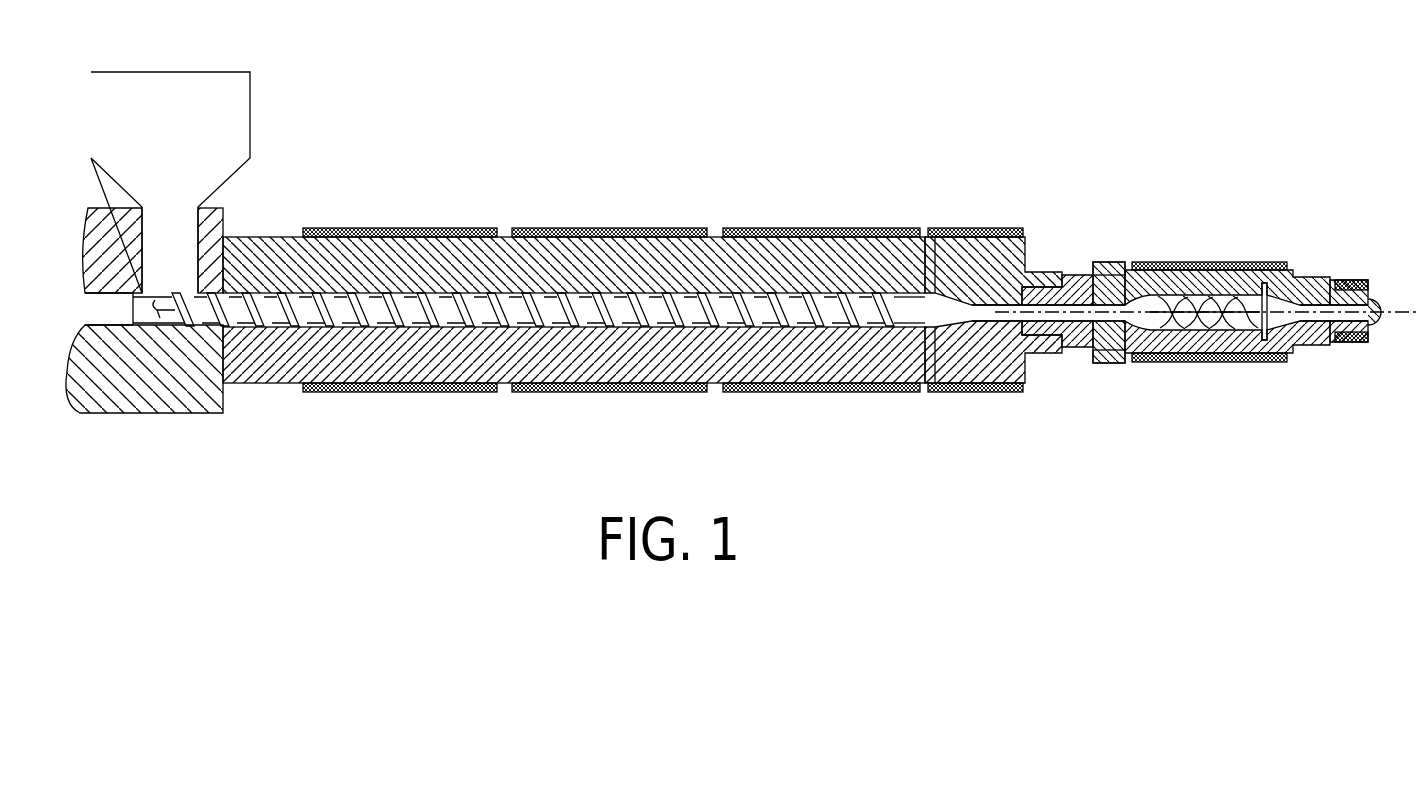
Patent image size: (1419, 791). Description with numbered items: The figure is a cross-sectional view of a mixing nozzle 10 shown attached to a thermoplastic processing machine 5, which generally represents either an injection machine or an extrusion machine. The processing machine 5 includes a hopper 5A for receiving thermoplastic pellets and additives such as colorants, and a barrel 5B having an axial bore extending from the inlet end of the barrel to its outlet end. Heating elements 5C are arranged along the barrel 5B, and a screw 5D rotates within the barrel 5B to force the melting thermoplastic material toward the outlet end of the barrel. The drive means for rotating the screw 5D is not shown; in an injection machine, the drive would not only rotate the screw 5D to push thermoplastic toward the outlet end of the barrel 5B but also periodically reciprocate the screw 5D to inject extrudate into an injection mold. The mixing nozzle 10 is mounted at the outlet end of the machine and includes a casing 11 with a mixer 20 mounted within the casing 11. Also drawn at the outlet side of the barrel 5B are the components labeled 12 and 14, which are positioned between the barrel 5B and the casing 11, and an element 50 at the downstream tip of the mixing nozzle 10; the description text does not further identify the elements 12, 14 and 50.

The thermoplastic processing machine 5 is at (417, 128).
The hopper 5A is at (203, 148).
The barrel 5B is at (714, 258).
The heating elements 5C is at (843, 228).
The screw 5D is at (537, 300).
The mixing nozzle 10 is at (1231, 167).
The casing 11 is at (1117, 373).
The adapter 12 is at (1073, 348).
The retaining nut 14 is at (1112, 263).
The mixer 20 is at (1185, 300).
The nozzle tip 50 is at (1317, 347).